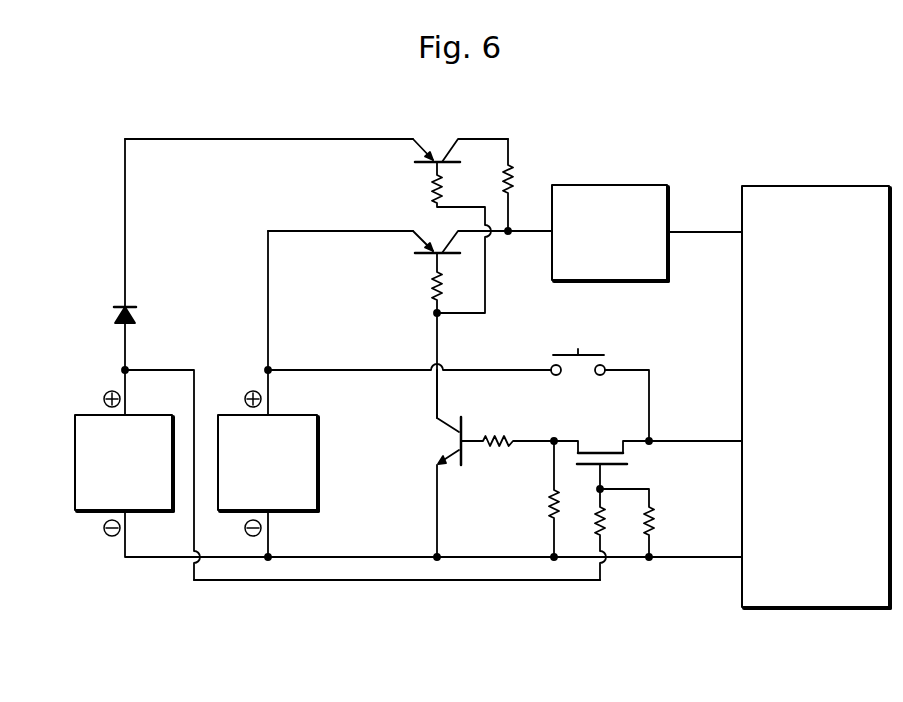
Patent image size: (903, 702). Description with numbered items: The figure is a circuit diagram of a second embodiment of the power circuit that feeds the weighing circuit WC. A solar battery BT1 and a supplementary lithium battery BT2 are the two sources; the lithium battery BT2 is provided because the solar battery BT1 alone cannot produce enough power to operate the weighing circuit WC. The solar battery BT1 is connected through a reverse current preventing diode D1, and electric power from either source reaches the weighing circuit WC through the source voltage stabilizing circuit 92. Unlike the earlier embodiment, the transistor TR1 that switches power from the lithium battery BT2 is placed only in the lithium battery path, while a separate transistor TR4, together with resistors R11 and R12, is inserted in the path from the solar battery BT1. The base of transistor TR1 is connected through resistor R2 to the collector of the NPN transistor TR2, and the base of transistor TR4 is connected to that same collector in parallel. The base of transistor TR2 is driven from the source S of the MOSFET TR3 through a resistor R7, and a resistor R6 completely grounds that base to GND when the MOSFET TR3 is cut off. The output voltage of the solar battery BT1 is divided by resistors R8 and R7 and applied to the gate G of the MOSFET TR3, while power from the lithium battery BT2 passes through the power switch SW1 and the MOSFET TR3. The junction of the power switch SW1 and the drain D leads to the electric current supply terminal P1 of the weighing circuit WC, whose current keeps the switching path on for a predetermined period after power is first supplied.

The reverse current preventing diode D1 is at (112, 319).
The solar battery BT1 is at (100, 463).
The lithium battery BT2 is at (290, 463).
The transistor TR4 is at (460, 138).
The resistor R11 is at (461, 237).
The resistor R12 is at (529, 185).
The transistor TR1 is at (467, 258).
The resistor R2 is at (453, 335).
The source voltage stabilizing circuit 92 is at (618, 184).
The weighing circuit WC is at (816, 414).
The electric current supply terminal P1 is at (709, 442).
The power switch SW1 is at (578, 353).
The transistor TR2 is at (432, 463).
The resistor R7 is at (547, 496).
The resistor R6 is at (539, 497).
The MOSFET TR3 is at (601, 456).
The resistor R8 is at (640, 523).
The ground GND is at (397, 570).